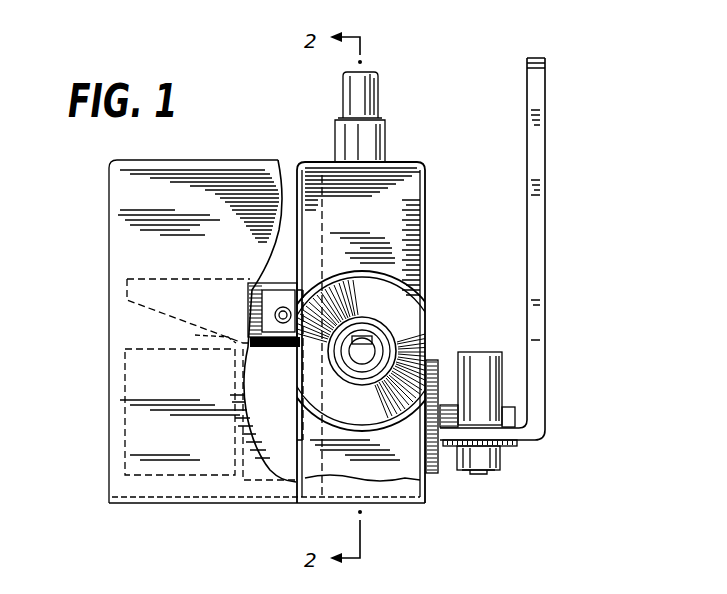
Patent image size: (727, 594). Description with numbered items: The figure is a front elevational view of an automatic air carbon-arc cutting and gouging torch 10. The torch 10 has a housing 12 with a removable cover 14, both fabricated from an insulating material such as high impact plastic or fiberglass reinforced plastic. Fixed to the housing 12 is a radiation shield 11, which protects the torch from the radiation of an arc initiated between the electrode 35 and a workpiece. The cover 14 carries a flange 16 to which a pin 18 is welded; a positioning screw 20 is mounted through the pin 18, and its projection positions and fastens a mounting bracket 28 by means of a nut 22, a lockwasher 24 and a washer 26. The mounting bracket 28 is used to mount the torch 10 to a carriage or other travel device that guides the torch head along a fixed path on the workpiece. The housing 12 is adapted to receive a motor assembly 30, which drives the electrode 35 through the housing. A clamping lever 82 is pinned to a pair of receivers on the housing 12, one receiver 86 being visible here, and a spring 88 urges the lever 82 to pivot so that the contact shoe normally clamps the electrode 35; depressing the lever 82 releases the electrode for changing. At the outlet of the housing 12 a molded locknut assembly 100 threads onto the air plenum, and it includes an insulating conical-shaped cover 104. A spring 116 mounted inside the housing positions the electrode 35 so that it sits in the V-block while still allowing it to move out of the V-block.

The automatic Air Carbon-Arc Cutting and Gouging Torch 10 is at (414, 160).
The radiation shield 11 is at (166, 140).
The housing 12 is at (303, 137).
The removable cover 14 is at (425, 168).
The flange 16 is at (440, 470).
The pin 18 is at (513, 412).
The positioning screw 20 is at (452, 352).
The nut 22 is at (490, 475).
The lockwasher 24 is at (501, 456).
The washer 26 is at (516, 444).
The mounting bracket 28 is at (541, 103).
The motor assembly 30 is at (124, 375).
The electrode 35 is at (364, 365).
The clamping lever 82 is at (180, 279).
The receiver 86 is at (268, 283).
The spring 88 is at (200, 333).
The molded locknut assembly 100 is at (412, 337).
The insulating conical-shaped cover 104 is at (302, 361).
The spring 116 is at (380, 345).